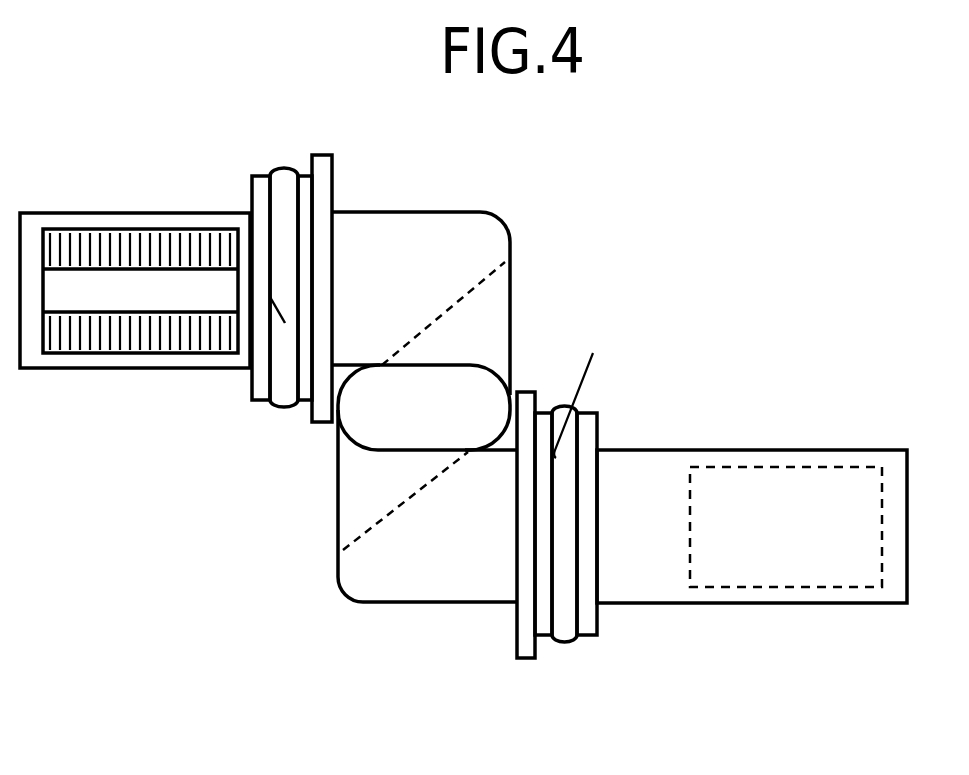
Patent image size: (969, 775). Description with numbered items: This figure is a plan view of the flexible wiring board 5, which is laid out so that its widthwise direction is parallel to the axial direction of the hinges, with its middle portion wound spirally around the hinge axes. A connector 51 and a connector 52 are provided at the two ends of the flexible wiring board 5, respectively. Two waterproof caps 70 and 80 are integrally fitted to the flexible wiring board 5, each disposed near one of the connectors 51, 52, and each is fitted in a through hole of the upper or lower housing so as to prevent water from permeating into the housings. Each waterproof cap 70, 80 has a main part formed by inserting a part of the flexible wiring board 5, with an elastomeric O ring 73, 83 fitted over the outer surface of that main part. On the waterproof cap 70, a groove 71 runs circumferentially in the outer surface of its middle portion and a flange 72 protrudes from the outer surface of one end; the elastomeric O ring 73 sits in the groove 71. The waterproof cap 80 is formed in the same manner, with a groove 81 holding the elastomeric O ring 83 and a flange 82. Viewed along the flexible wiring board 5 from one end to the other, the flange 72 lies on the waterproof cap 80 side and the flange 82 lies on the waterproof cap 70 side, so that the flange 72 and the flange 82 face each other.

The flexible wiring board 5 is at (497, 290).
The connector 51 is at (135, 242).
The connector 52 is at (777, 467).
The waterproof cap 70 is at (262, 180).
The groove 71 is at (285, 323).
The flange 72 is at (323, 170).
The elastometric O ring 73 is at (290, 178).
The waterproof cap 80 is at (590, 627).
The groove 81 is at (584, 384).
The flange 82 is at (528, 648).
The elastometric O ring 83 is at (567, 640).